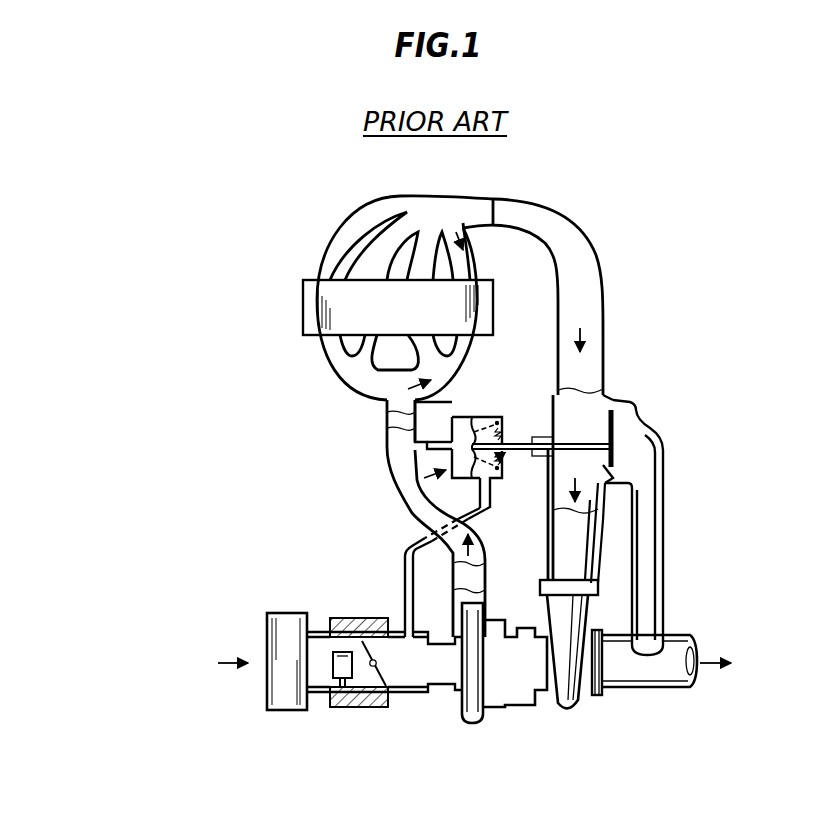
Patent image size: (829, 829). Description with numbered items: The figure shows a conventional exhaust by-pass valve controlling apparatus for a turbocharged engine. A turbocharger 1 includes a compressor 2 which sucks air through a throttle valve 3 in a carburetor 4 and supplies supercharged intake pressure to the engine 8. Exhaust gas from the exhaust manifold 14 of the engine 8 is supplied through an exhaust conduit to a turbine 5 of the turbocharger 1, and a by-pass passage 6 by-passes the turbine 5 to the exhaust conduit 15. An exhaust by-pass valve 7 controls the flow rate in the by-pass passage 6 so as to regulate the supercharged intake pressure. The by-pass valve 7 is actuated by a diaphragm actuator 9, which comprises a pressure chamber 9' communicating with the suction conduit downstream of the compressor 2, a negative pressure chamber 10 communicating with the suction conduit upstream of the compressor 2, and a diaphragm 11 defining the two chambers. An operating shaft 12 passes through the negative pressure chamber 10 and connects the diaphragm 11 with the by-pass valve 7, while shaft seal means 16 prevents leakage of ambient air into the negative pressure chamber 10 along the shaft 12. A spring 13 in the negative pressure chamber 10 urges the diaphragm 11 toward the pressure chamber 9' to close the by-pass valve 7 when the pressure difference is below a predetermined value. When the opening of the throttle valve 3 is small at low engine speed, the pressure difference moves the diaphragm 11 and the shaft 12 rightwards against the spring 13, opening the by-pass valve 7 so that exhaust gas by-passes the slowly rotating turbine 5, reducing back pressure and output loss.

The turbocharger 1 is at (519, 712).
The compressor 2 is at (468, 724).
The throttle valve 3 is at (372, 658).
The carburetor 4 is at (366, 676).
The turbine 5 is at (568, 714).
The by-pass passage 6 is at (652, 541).
The exhaust by-pass valve 7 is at (620, 426).
The engine 8 is at (405, 324).
The diaphragm actuator 9 is at (419, 518).
The pressure chamber 9' is at (434, 425).
The negative pressure chamber 10 is at (492, 484).
The diaphragm 11 is at (472, 422).
The operating shaft 12 is at (512, 453).
The spring 13 is at (486, 421).
The exhaust manifold 14 is at (437, 206).
The exhaust conduit 15 is at (670, 682).
The shaft seal means 16 is at (505, 442).